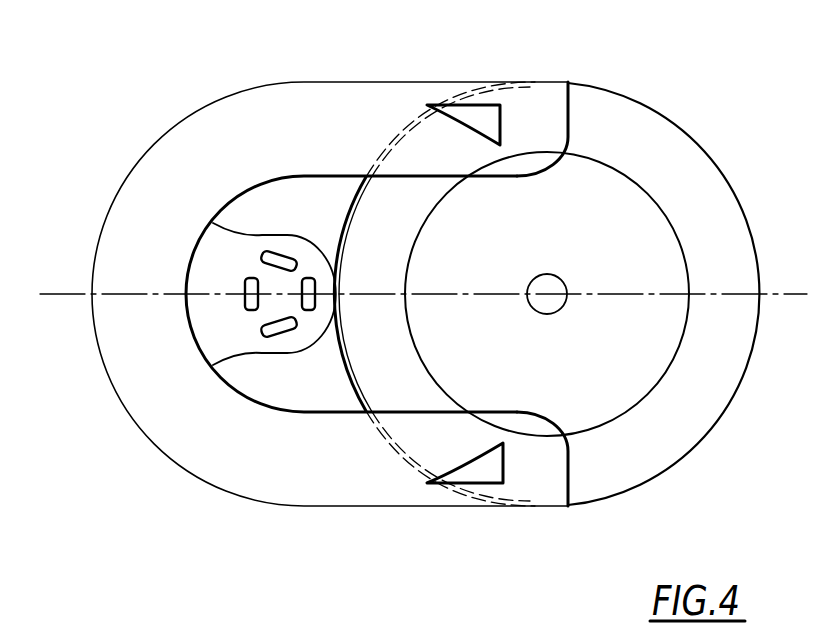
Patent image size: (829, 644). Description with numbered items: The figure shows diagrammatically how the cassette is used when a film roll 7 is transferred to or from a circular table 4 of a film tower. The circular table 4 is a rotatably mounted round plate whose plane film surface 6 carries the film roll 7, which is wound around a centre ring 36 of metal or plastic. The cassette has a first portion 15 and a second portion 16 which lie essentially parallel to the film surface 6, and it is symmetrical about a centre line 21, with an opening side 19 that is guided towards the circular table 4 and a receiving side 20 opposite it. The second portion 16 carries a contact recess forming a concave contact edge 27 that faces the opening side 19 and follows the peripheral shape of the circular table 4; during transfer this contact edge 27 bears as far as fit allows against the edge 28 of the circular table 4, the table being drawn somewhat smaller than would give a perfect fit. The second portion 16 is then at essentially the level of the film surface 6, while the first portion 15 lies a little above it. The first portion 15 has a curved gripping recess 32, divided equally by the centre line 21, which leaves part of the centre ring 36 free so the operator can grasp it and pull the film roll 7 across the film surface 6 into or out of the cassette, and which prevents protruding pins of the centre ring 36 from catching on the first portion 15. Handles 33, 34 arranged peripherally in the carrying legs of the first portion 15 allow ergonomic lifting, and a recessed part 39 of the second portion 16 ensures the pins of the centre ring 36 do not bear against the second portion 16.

The circular table 4 is at (734, 409).
The film surface 6 is at (650, 458).
The film roll 7 is at (573, 397).
The first portion 15 is at (197, 138).
The second portion 16 is at (205, 323).
The opening side 19 is at (765, 262).
The receiving side 20 is at (84, 322).
The centre line 21 is at (779, 297).
The contact edge 27 is at (333, 357).
The edge of the circular table 28 is at (351, 392).
The gripping recess 32 is at (192, 353).
The handle 33 is at (473, 470).
The handle 34 is at (470, 115).
The centre ring 36 is at (552, 285).
The recessed part 39 is at (287, 202).